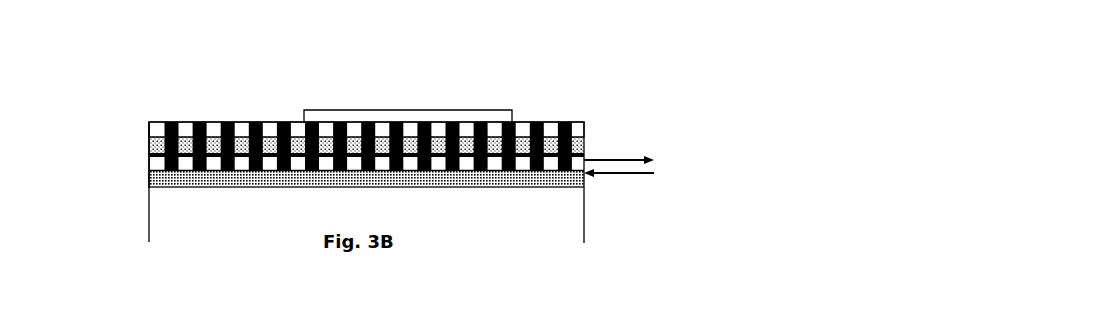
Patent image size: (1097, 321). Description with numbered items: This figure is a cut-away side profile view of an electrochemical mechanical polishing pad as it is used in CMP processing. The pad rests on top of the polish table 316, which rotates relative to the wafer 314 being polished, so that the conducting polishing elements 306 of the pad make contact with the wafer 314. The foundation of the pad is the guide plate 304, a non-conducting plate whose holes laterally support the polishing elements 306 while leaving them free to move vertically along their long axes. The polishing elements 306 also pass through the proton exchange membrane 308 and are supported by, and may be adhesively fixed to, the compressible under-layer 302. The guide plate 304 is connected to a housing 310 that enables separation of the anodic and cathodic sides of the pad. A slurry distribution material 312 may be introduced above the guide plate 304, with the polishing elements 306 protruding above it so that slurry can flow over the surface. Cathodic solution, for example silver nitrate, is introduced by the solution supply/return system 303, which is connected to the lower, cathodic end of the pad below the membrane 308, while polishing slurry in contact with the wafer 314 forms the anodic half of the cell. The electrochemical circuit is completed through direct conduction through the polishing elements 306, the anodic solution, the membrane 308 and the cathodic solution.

The under-layer 302 is at (166, 169).
The solution supply/return system 303 is at (707, 199).
The guide plate 304 is at (585, 148).
The polishing elements 306 is at (575, 123).
The proton exchange membrane 308 is at (148, 150).
The housing 310 is at (149, 184).
The slurry distribution material 312 is at (194, 123).
The wafer 314 is at (457, 108).
The polish table 316 is at (164, 213).